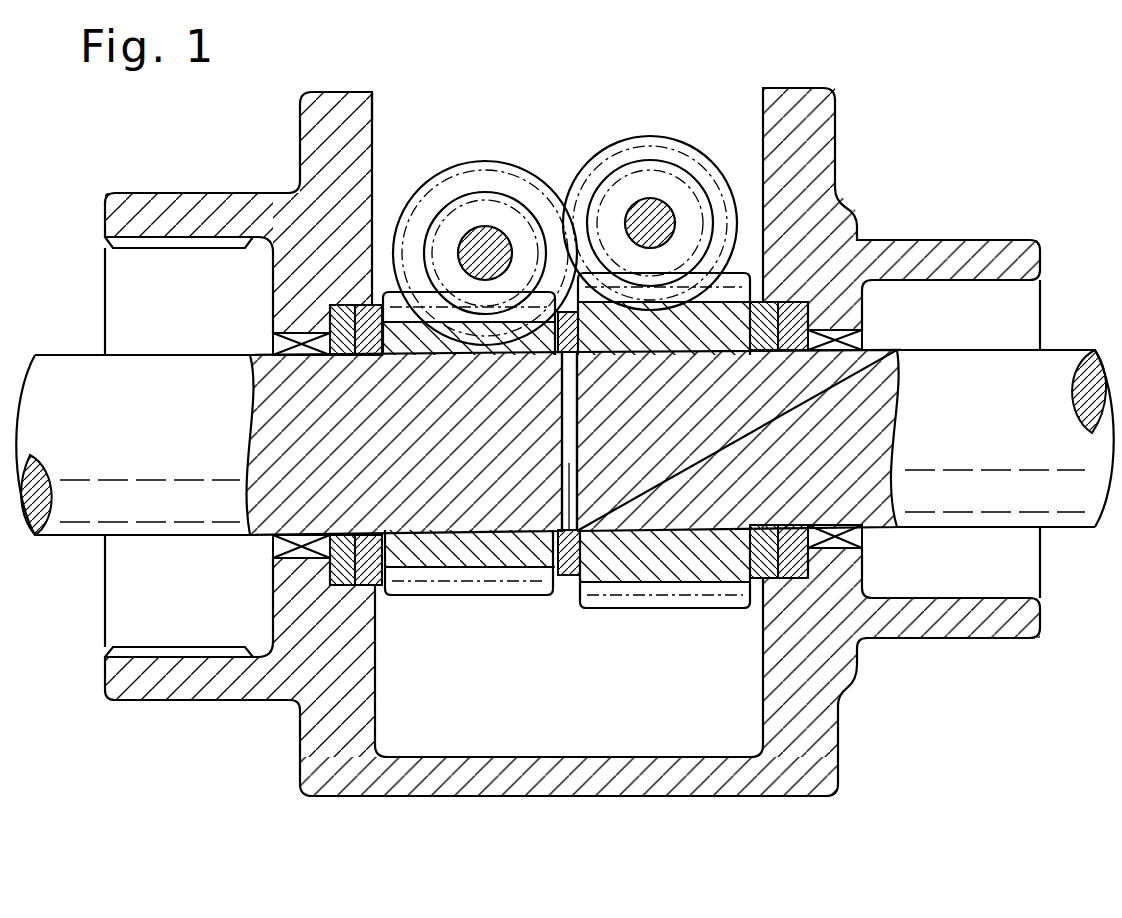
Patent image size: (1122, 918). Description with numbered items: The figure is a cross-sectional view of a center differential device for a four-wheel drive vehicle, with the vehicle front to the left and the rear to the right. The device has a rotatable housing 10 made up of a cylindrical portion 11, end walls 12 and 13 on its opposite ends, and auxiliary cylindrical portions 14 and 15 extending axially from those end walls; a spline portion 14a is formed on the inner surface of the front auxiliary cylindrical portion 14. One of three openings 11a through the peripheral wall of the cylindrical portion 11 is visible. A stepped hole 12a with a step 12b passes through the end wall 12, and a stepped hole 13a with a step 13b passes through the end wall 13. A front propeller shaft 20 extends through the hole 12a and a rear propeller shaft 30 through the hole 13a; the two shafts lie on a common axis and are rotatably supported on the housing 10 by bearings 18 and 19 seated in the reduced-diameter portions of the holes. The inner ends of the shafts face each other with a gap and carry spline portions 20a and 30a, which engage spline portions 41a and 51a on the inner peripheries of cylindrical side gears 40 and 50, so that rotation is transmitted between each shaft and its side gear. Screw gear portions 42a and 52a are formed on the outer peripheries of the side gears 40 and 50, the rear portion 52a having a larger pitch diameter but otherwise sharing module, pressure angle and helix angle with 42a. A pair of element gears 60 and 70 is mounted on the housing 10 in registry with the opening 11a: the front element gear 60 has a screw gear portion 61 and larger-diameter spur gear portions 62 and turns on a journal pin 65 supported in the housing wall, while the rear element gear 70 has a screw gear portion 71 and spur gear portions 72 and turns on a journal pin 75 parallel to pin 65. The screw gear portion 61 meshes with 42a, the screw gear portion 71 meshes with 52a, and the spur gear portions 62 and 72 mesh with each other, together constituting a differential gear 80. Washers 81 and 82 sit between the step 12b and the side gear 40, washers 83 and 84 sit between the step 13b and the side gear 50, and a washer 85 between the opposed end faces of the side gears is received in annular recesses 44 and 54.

The housing 10 is at (842, 88).
The cylindrical portion 11 is at (590, 783).
The opening 11a is at (376, 108).
The end wall 12 is at (298, 151).
The stepped hole 12a is at (275, 340).
The step 12b is at (340, 305).
The end wall 13 is at (837, 142).
The stepped hole 13a is at (857, 340).
The step 13b is at (857, 306).
The auxiliary cylindrical portion 14 is at (192, 191).
The spline portion 14a is at (143, 250).
The auxiliary cylindrical portion 15 is at (956, 239).
The bearing 18 is at (273, 551).
The bearing 19 is at (862, 549).
The front propeller shaft 20 is at (62, 355).
The spline portion 20a is at (438, 536).
The rear propeller shaft 30 is at (1068, 349).
The spline portion 30a is at (653, 536).
The side gear 40 is at (470, 605).
The spline portion 41a is at (493, 568).
The screw gear portion 42a is at (397, 596).
The annular recess 44 is at (565, 580).
The side gear 50 is at (716, 618).
The spline portion 51a is at (683, 583).
The screw gear portion 52a is at (740, 612).
The annular recess 54 is at (577, 598).
The front element gear 60 is at (476, 155).
The screw gear portion 61 is at (504, 200).
The spur gear portion 62 is at (452, 172).
The journal pin 65 is at (465, 236).
The rear element gear 70 is at (690, 130).
The screw gear portion 71 is at (618, 160).
The spur gear portion 72 is at (648, 136).
The journal pin 75 is at (680, 203).
The differential gear 80 is at (575, 628).
The washer 81 is at (342, 585).
The washer 82 is at (372, 585).
The washer 83 is at (768, 578).
The washer 84 is at (803, 580).
The washer 85 is at (566, 578).